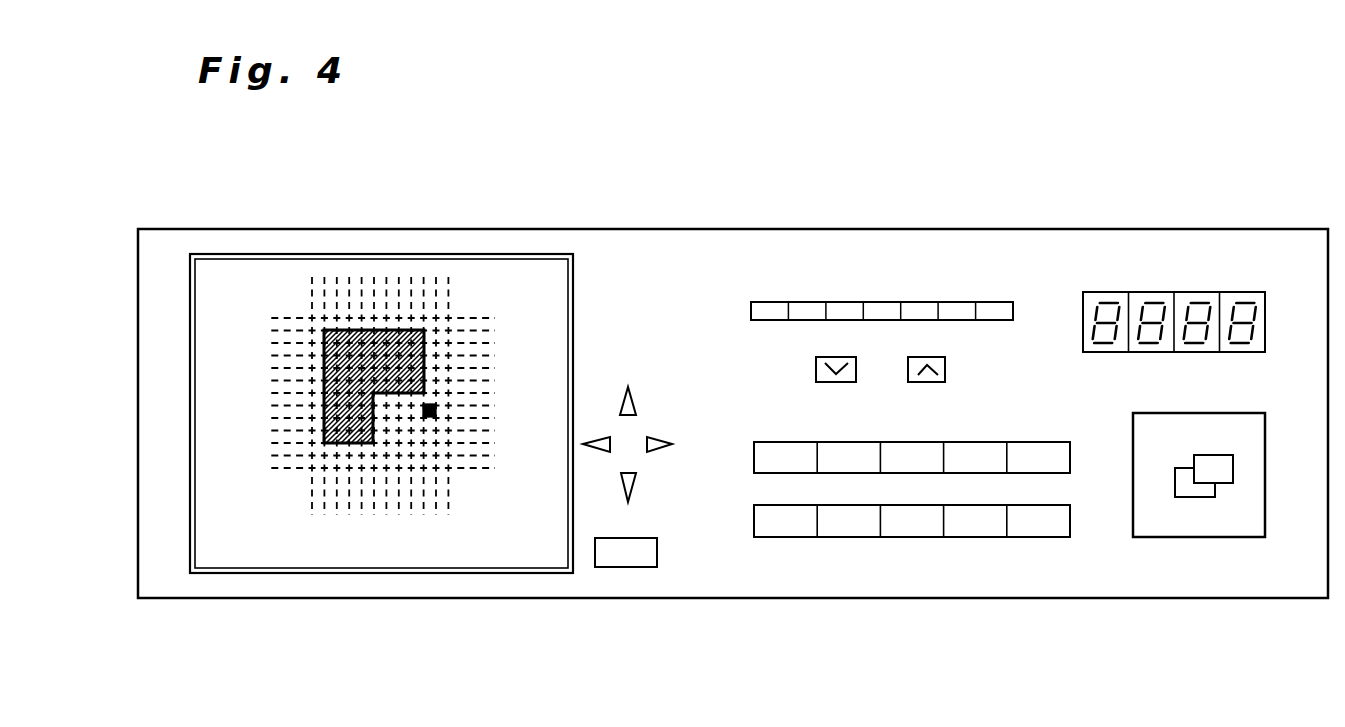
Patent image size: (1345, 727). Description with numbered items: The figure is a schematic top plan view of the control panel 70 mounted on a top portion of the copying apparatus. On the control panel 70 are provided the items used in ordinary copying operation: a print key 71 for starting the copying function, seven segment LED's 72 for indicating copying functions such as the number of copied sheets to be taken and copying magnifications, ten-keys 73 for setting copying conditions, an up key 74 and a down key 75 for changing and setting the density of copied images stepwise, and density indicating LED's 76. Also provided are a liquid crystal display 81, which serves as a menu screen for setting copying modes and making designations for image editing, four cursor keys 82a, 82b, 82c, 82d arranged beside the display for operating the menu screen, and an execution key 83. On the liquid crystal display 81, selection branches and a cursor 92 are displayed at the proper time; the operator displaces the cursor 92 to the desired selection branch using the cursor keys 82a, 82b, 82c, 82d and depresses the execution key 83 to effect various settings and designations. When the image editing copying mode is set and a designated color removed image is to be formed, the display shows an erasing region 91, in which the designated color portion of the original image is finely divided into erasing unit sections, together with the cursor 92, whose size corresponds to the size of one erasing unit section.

The control panel 70 is at (802, 208).
The print key 71 is at (1217, 537).
The seven segment LED's 72 is at (1198, 293).
The ten-keys 73 is at (942, 537).
The up key 74 is at (945, 367).
The down key 75 is at (816, 365).
The density indicating LED's 76 is at (847, 302).
The liquid crystal display 81 is at (357, 254).
The cursor key 82a is at (634, 398).
The cursor key 82b is at (637, 483).
The cursor key 82c is at (601, 437).
The cursor key 82d is at (652, 451).
The execution key 83 is at (623, 567).
The erasing region 91 is at (323, 363).
The cursor 92 is at (436, 412).